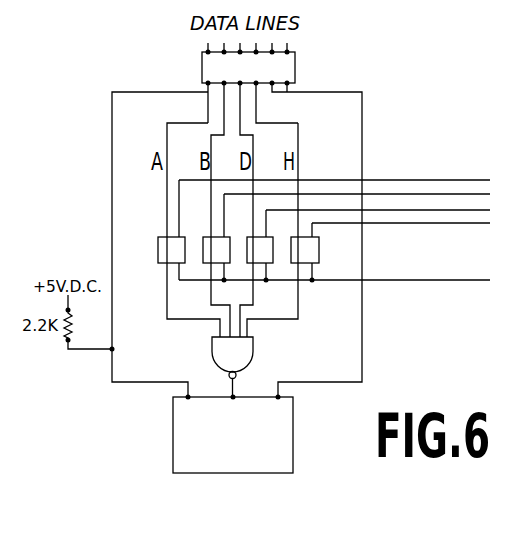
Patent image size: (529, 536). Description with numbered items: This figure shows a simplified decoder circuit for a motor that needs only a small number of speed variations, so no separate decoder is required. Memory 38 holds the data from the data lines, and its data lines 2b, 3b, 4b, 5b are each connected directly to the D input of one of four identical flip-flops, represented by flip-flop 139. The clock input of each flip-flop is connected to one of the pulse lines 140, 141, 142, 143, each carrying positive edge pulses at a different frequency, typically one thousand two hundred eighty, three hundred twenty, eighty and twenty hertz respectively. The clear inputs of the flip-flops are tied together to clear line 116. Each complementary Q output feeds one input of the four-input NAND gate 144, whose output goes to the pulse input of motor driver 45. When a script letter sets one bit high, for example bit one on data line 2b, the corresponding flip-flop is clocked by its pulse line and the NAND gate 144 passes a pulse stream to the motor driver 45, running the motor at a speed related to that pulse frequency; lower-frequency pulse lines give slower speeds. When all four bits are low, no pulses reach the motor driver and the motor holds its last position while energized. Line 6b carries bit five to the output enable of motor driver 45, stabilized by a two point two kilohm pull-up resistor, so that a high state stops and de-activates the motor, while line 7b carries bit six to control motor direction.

The memory 38 is at (302, 71).
The line 6b is at (135, 91).
The line 7b is at (322, 92).
The data line 2b is at (207, 89).
The data line 3b is at (215, 118).
The data line 4b is at (255, 117).
The data line 5b is at (300, 141).
The flip-flop 139 is at (156, 256).
The pulse line 140 is at (420, 178).
The pulse line 141 is at (472, 193).
The pulse line 142 is at (428, 210).
The pulse line 143 is at (470, 224).
The clear line 116 is at (440, 283).
The four-input NAND gate 144 is at (258, 355).
The motor driver 45 is at (295, 425).